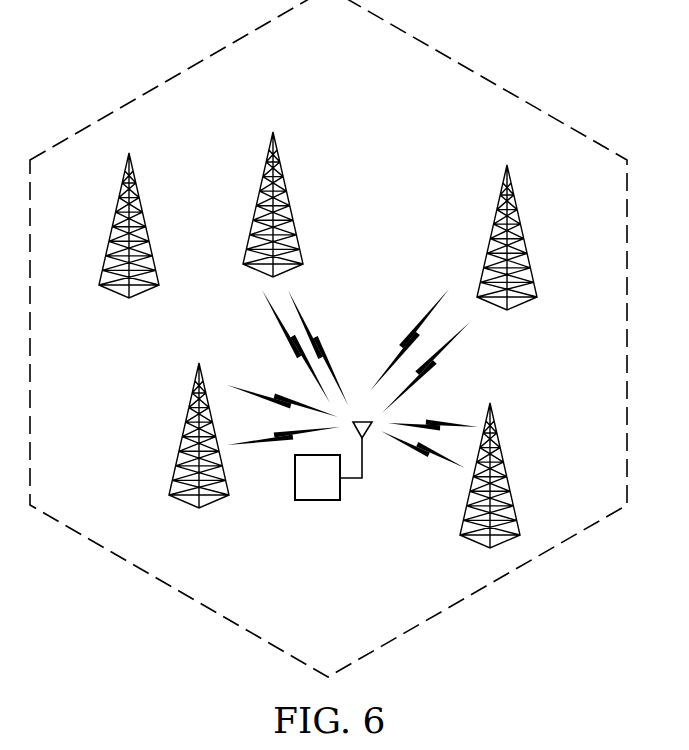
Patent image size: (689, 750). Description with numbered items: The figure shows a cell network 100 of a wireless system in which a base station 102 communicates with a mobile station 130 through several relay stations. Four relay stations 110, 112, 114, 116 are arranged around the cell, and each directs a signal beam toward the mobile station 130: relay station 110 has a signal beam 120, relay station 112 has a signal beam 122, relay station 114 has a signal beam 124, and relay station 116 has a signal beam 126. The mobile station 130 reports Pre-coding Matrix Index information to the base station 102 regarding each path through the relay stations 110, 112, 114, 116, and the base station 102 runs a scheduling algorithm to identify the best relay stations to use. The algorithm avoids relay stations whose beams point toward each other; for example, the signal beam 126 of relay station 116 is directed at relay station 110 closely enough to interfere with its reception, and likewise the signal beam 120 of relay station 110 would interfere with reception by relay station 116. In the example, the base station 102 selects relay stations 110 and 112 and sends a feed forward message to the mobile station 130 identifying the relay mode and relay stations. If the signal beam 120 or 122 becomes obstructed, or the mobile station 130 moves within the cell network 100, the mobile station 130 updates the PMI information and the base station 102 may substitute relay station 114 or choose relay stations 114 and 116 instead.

The cell network 100 is at (496, 74).
The base station 102 is at (114, 227).
The relay station 110 is at (183, 438).
The relay station 112 is at (256, 205).
The relay station 114 is at (524, 237).
The relay station 116 is at (508, 476).
The signal beam 120 is at (255, 372).
The signal beam 122 is at (330, 302).
The signal beam 124 is at (499, 356).
The signal beam 126 is at (419, 488).
The mobile station 130 is at (318, 501).